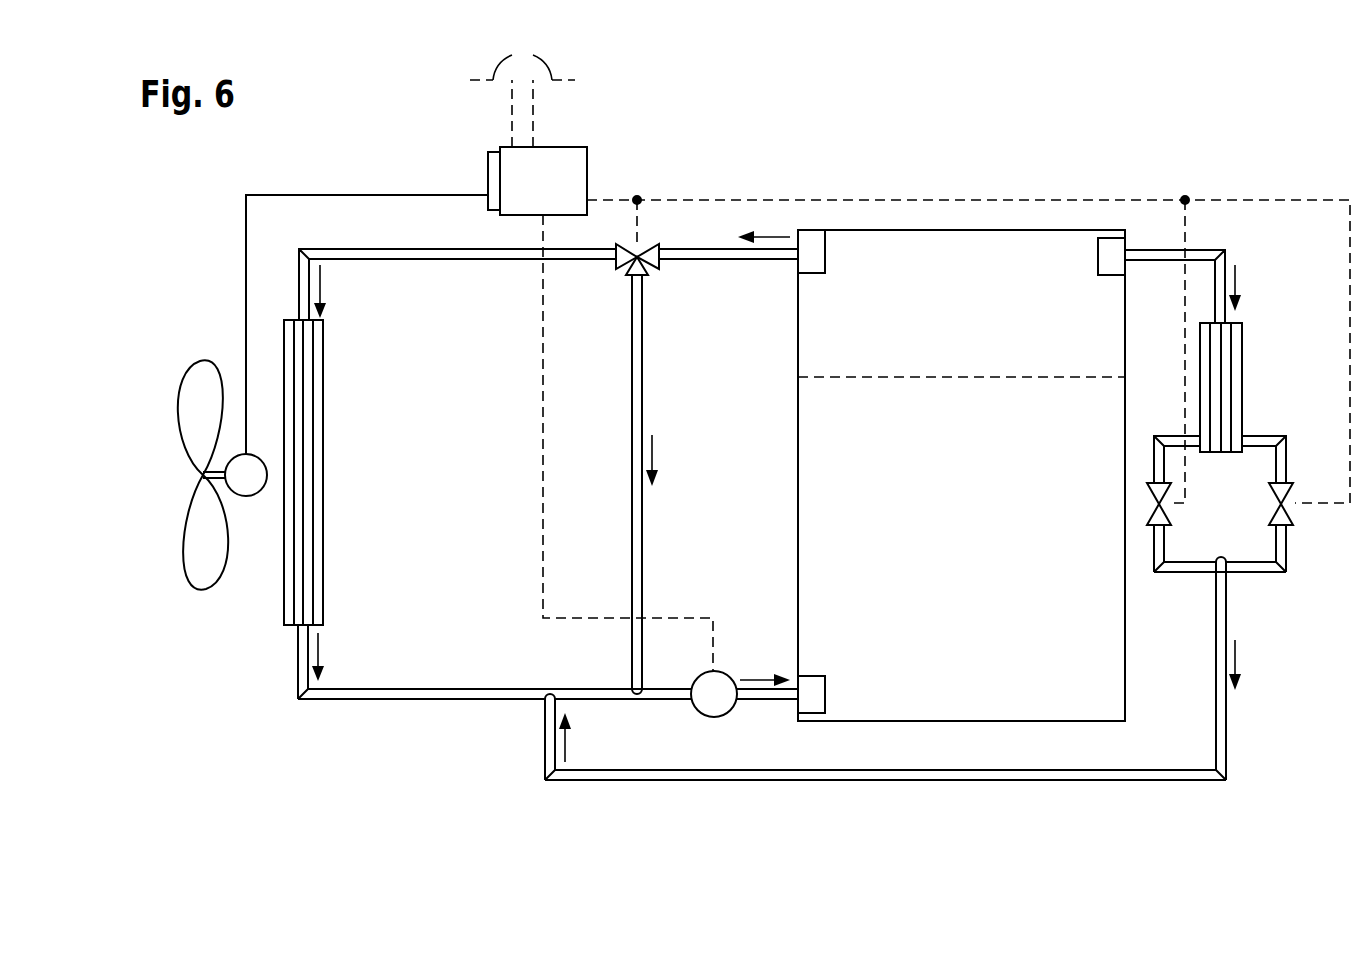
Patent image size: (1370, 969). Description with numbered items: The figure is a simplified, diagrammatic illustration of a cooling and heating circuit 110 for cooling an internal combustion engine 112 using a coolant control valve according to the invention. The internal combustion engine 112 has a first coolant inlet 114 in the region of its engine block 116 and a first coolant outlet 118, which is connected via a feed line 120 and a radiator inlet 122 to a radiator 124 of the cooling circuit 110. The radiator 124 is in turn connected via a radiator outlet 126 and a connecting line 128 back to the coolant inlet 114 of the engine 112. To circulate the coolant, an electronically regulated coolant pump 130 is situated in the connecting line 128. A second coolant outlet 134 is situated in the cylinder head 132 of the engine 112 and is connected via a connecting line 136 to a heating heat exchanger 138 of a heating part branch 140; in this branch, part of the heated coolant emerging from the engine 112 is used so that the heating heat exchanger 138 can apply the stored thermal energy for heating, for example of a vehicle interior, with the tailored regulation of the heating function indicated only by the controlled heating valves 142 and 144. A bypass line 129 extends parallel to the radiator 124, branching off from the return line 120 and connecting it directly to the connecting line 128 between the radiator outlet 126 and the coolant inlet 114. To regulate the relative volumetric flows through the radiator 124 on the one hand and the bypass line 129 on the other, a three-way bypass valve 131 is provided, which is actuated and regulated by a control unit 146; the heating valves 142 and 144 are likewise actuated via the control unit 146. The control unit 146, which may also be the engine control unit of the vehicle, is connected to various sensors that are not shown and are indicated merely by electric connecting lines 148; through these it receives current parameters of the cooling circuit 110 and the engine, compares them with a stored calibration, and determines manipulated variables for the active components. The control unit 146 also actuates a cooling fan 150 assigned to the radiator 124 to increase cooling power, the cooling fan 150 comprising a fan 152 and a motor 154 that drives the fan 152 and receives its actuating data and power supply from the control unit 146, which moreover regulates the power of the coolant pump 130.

The cooling and heating circuit 110 is at (362, 721).
The internal combustion engine 112 is at (1060, 722).
The first coolant inlet 114 is at (812, 697).
The engine block 116 is at (955, 640).
The first coolant outlet 118 is at (812, 255).
The feed line 120 is at (410, 257).
The radiator inlet 122 is at (298, 317).
The radiator 124 is at (323, 470).
The radiator outlet 126 is at (300, 630).
The connecting line 128 is at (452, 700).
The bypass line 129 is at (642, 393).
The coolant pump 130 is at (722, 722).
The three-way bypass valve 131 is at (648, 265).
The cylinder head 132 is at (968, 265).
The second coolant outlet 134 is at (1112, 258).
The connecting line 136 is at (1203, 257).
The heating heat exchanger 138 is at (1242, 378).
The heating part branch 140 is at (1253, 748).
The heating valve 142 is at (1287, 517).
The heating valve 144 is at (1158, 516).
The control unit 146 is at (567, 170).
The electric connecting lines 148 is at (522, 82).
The cooling fan 150 is at (178, 495).
The fan 152 is at (200, 540).
The motor 154 is at (247, 496).